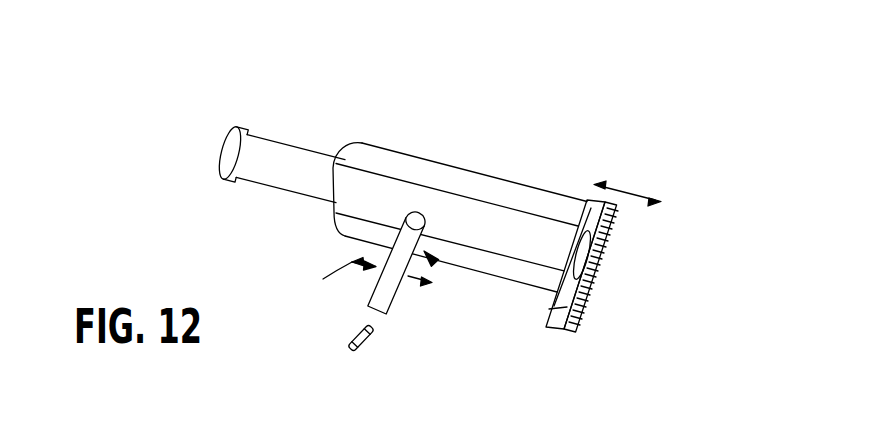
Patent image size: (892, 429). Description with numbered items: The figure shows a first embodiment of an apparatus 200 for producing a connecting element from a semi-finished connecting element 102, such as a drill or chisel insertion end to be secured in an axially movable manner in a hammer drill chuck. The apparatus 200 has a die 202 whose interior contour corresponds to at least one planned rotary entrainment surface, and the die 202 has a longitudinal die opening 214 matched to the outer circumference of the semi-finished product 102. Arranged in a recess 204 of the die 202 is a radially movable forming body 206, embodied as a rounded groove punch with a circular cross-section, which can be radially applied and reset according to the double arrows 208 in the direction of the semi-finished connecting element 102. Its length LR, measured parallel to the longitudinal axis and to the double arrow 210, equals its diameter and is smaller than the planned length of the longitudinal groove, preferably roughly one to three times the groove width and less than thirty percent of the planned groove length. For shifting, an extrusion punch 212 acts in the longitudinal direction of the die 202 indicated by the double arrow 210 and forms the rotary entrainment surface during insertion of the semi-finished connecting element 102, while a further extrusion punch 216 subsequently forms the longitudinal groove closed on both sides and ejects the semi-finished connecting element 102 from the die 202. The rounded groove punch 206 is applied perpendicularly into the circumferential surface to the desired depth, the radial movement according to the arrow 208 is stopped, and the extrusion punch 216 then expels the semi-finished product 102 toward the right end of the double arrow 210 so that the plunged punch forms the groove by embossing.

The apparatus 200 is at (531, 118).
The semi-finished connecting element 102 is at (301, 151).
The die 202 is at (553, 192).
The recess 204 is at (435, 263).
The forming body 206 is at (365, 303).
The double arrows 208 is at (366, 347).
The double arrow 210 is at (634, 191).
The extrusion punch 212 is at (219, 150).
The longitudinal die opening 214 is at (383, 155).
The extrusion punch 216 is at (561, 333).
The length of the rounded groove punch LR is at (362, 277).